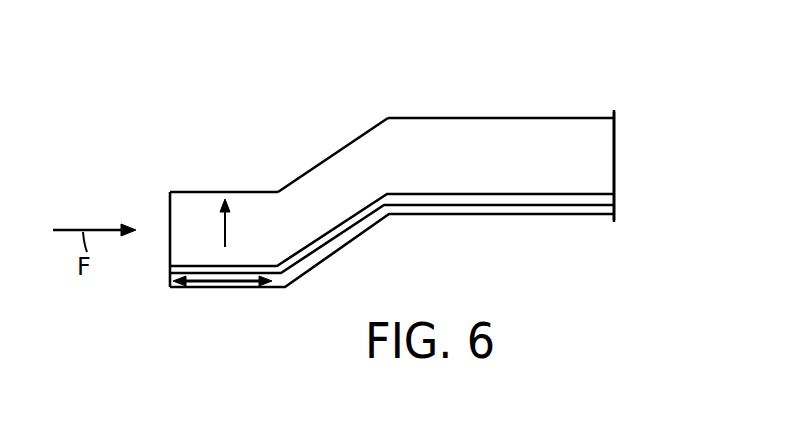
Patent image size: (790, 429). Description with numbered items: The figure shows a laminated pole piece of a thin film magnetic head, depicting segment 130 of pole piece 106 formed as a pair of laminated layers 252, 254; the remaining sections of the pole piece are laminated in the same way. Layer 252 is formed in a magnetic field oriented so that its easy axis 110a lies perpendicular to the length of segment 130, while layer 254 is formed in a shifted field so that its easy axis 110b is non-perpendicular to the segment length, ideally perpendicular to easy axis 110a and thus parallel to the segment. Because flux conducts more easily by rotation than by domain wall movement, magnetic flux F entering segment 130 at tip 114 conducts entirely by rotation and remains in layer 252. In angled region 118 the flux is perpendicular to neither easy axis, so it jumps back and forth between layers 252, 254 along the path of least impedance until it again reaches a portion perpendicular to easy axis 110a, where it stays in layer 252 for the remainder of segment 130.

The pole piece 106 is at (423, 88).
The tip 114 is at (190, 202).
The angled region 118 is at (332, 157).
The segment 130 is at (525, 117).
The laminated layer 252 is at (596, 167).
The laminated layer 254 is at (573, 208).
The easy axis 110a is at (226, 230).
The easy axis 110b is at (233, 288).